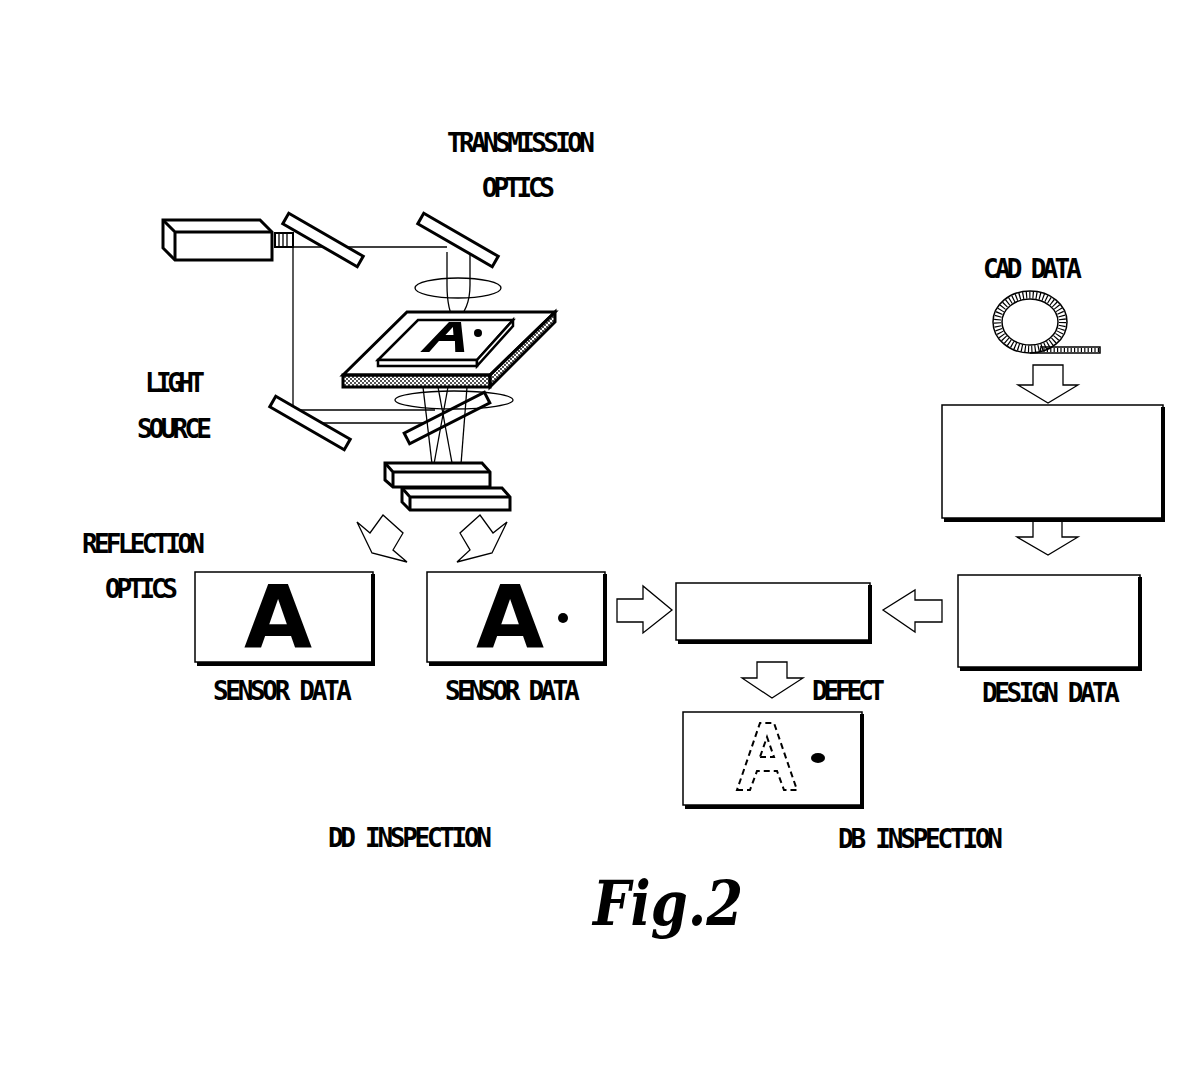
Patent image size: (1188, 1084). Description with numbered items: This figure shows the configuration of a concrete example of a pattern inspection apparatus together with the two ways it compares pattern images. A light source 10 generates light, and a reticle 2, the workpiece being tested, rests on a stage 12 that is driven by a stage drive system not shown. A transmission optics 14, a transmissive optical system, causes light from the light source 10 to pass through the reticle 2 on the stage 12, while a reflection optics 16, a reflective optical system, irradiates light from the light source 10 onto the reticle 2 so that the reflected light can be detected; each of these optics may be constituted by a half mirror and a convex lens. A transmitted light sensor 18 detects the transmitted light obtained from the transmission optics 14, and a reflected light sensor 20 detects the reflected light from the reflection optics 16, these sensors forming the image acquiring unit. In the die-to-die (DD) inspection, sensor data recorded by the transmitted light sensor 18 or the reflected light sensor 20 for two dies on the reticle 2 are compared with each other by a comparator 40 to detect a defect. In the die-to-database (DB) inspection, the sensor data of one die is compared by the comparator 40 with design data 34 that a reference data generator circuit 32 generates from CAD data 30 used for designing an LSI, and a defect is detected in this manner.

The reticle 2 is at (499, 327).
The light source 10 is at (205, 264).
The stage 12 is at (541, 306).
The transmission optics 14 is at (472, 235).
The reflection optics 16 is at (301, 429).
The transmitted light sensor 18 is at (520, 499).
The reflected light sensor 20 is at (500, 467).
The CAD data 30 is at (993, 319).
The reference data generator circuit 32 is at (938, 444).
The design data 34 is at (956, 584).
The comparator 40 is at (771, 581).